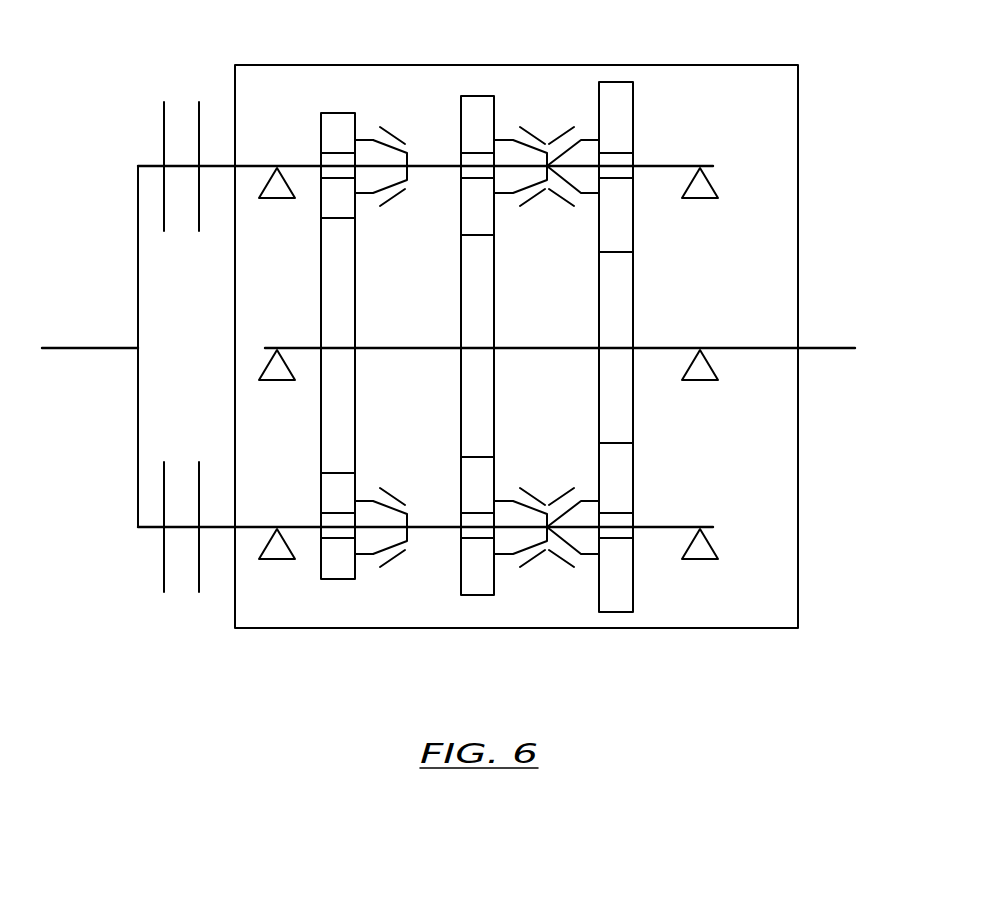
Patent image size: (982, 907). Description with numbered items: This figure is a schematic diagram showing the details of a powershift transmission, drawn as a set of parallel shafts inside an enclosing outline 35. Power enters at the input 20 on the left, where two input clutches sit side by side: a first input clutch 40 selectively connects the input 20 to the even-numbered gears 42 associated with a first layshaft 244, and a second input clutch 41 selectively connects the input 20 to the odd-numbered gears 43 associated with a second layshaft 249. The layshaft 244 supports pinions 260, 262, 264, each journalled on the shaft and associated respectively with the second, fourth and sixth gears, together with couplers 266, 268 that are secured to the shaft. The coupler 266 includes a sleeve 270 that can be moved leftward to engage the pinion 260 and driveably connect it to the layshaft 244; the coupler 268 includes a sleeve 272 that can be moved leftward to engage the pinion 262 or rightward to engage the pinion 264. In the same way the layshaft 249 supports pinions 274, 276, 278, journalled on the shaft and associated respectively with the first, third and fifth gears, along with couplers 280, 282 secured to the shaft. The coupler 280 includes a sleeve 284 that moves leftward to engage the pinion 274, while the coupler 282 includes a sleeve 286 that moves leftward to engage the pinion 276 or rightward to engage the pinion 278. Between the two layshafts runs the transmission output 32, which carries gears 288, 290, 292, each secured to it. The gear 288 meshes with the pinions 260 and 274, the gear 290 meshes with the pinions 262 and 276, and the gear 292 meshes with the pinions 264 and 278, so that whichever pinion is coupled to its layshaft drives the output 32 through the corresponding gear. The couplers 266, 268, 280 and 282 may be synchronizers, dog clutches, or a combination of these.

The input 20 is at (110, 346).
The transmission output 32 is at (845, 347).
The transmission housing 35 is at (505, 65).
The first input clutch 40 is at (164, 552).
The second input clutch 41 is at (163, 142).
The even-numbered gears 42 is at (368, 597).
The odd-numbered gears 43 is at (383, 97).
The first layshaft 244 is at (219, 529).
The second layshaft 249 is at (220, 165).
The pinion 260 is at (321, 497).
The pinion 262 is at (461, 503).
The pinion 264 is at (633, 480).
The coupler 266 is at (408, 540).
The coupler 268 is at (553, 542).
The sleeve 270 is at (402, 500).
The sleeve 272 is at (528, 498).
The pinion 274 is at (338, 113).
The pinion 276 is at (478, 96).
The pinion 278 is at (615, 82).
The coupler 280 is at (408, 150).
The coupler 282 is at (552, 180).
The sleeve 284 is at (395, 197).
The sleeve 286 is at (528, 136).
The gear 288 is at (355, 390).
The gear 290 is at (494, 390).
The gear 292 is at (633, 395).